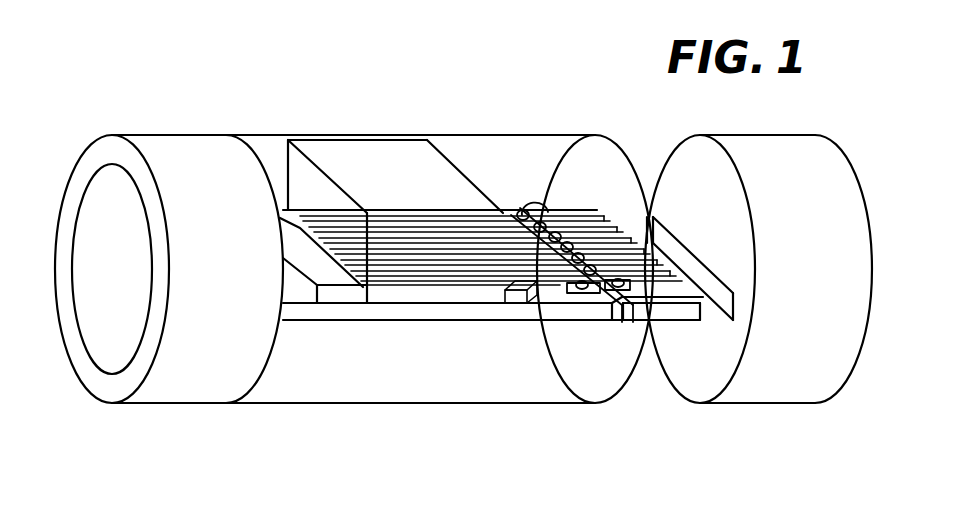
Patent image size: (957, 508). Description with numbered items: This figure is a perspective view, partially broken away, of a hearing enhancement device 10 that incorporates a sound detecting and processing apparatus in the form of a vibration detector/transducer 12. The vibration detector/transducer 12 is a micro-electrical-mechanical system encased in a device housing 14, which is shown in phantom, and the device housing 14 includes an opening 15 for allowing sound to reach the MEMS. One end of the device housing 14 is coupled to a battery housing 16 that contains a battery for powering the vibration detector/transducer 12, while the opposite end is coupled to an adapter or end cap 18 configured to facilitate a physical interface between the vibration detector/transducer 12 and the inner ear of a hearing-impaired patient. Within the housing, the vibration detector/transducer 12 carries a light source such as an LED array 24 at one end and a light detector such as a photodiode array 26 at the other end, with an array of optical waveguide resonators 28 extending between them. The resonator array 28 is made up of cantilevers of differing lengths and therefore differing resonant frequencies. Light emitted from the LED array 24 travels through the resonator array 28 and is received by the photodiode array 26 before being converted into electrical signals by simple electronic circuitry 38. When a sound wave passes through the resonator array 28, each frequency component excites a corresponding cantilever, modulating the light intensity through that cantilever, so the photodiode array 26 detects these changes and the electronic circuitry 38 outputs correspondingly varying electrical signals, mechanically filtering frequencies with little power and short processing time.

The hearing enhancement device 10 is at (247, 103).
The vibration detector/transducer 12 is at (415, 324).
The device housing 14 is at (520, 387).
The opening 15 is at (393, 163).
The battery housing 16 is at (190, 368).
The end cap 18 is at (782, 363).
The LED array 24 is at (310, 248).
The photodiode array 26 is at (465, 238).
The array of optical waveguide resonators 28 is at (385, 232).
The electronic circuitry 38 is at (497, 210).